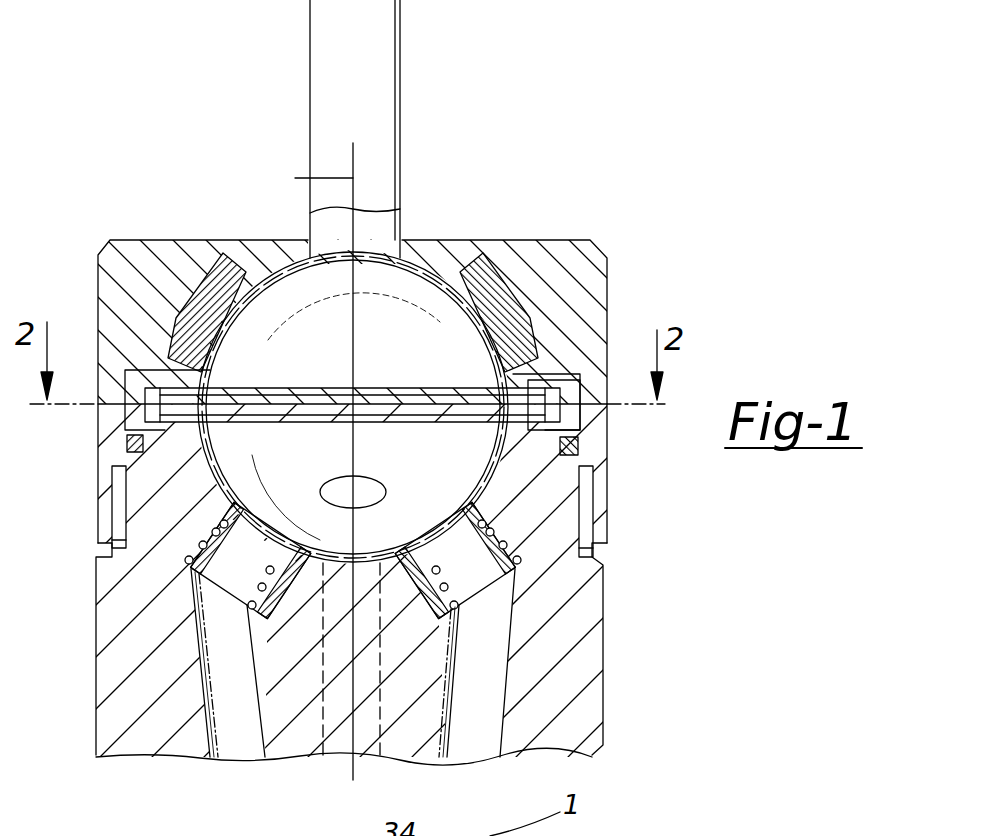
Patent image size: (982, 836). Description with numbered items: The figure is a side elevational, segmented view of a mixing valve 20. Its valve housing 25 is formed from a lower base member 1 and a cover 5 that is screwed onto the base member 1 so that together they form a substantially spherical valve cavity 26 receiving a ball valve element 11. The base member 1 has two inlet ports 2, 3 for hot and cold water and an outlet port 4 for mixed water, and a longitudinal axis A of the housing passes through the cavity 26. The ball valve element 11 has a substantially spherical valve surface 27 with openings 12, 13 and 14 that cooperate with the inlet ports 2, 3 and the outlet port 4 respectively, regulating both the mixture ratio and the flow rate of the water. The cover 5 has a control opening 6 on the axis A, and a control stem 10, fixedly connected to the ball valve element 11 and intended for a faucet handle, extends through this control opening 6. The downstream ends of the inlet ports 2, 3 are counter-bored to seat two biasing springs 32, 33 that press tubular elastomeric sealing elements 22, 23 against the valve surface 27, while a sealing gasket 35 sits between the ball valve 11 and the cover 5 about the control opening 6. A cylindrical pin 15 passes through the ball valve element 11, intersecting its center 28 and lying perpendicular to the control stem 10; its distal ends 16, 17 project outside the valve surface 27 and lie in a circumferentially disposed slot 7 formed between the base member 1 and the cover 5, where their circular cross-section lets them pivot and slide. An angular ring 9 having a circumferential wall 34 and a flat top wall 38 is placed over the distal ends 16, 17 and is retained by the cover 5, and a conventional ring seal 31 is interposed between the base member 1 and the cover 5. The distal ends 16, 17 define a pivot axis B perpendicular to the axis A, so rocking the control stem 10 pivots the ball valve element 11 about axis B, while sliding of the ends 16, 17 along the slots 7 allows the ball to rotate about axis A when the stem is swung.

The lower base member 1 is at (590, 645).
The inlet port 2 is at (241, 742).
The inlet port 3 is at (465, 735).
The outlet port 4 is at (326, 745).
The cover 5 is at (162, 248).
The control opening 6 is at (428, 255).
The circumferentially disposed slot 7 is at (125, 418).
The angular ring 9 is at (565, 360).
The control stem 10 is at (392, 56).
The ball valve element 11 is at (306, 500).
The opening 12 is at (262, 478).
The opening 13 is at (422, 485).
The opening 14 is at (365, 480).
The cylindrical pin 15 is at (330, 388).
The distal end 16 is at (230, 392).
The distal end 17 is at (490, 384).
The mixing valve 20 is at (580, 218).
The tubular elastomeric sealing element 22 is at (248, 560).
The tubular elastomeric sealing element 23 is at (458, 560).
The valve housing 25 is at (615, 548).
The valve cavity 26 is at (500, 460).
The spherical valve surface 27 is at (100, 570).
The center 28 is at (365, 398).
The ring seal 31 is at (110, 468).
The biasing spring 32 is at (220, 664).
The biasing spring 33 is at (470, 682).
The circumferential wall 34 is at (577, 412).
The sealing gasket 35 is at (170, 305).
The flat top wall 38 is at (560, 335).
The longitudinal axis A is at (298, 178).
The pivot axis B is at (316, 418).